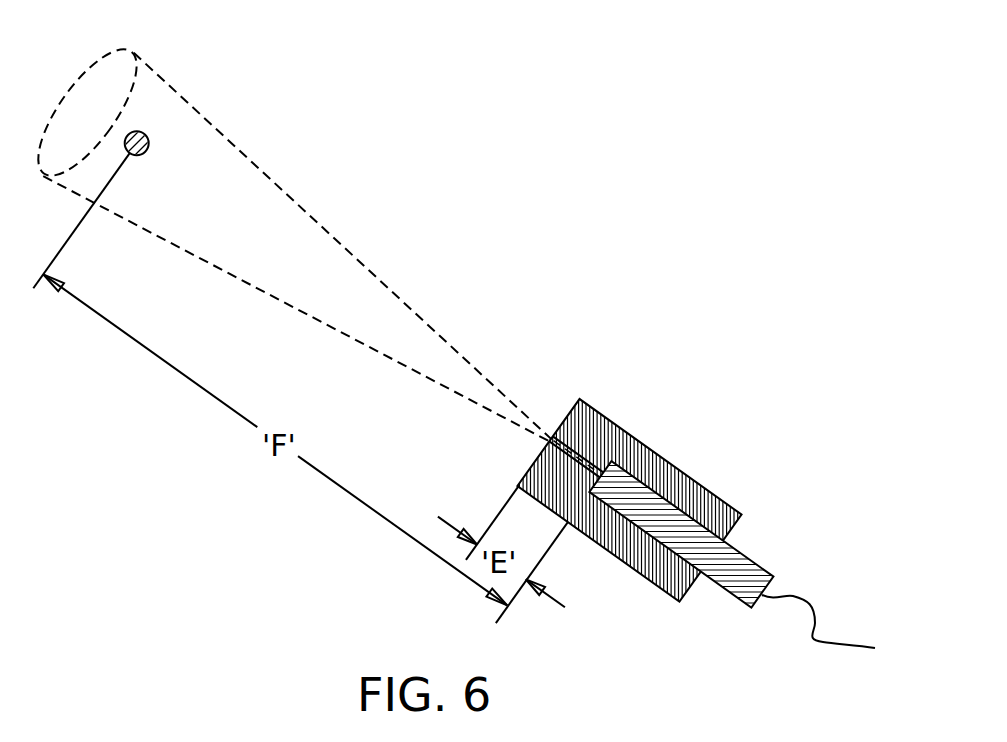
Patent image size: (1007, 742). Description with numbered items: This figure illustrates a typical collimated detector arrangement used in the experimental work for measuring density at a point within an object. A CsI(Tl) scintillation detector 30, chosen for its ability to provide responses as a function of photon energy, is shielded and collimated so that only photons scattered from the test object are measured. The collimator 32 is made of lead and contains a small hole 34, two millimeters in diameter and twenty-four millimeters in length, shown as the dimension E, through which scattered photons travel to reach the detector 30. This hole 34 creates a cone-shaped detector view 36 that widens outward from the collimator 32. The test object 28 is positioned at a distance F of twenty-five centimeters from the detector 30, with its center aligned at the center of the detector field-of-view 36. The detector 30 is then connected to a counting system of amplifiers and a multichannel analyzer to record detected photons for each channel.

The test object 28 is at (148, 137).
The detector 30 is at (748, 555).
The collimator 32 is at (645, 443).
The hole 34 is at (530, 383).
The cone-shaped detector view 36 is at (255, 162).